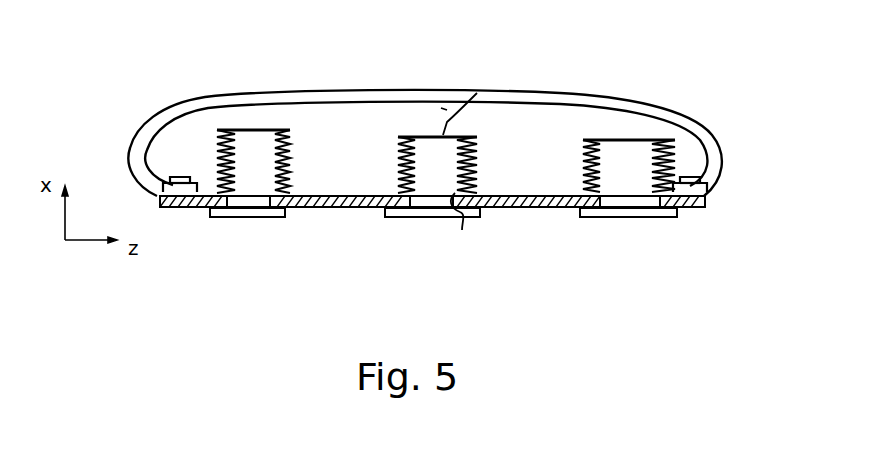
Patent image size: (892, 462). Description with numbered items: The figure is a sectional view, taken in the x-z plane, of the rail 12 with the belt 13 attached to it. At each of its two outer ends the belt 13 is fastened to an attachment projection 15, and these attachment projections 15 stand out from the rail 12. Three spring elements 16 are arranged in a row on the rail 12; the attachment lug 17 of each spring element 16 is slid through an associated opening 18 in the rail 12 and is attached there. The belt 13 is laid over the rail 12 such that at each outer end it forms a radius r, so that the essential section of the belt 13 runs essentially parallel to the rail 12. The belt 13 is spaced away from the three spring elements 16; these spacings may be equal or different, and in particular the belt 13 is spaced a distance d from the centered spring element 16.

The rail 12 is at (319, 214).
The belt 13 is at (610, 99).
The attachment projection 15 is at (175, 176).
The spring element 16 is at (648, 152).
The attachment lug 17 is at (612, 210).
The opening 18 is at (462, 230).
The distance d is at (477, 100).
The radius r is at (717, 151).